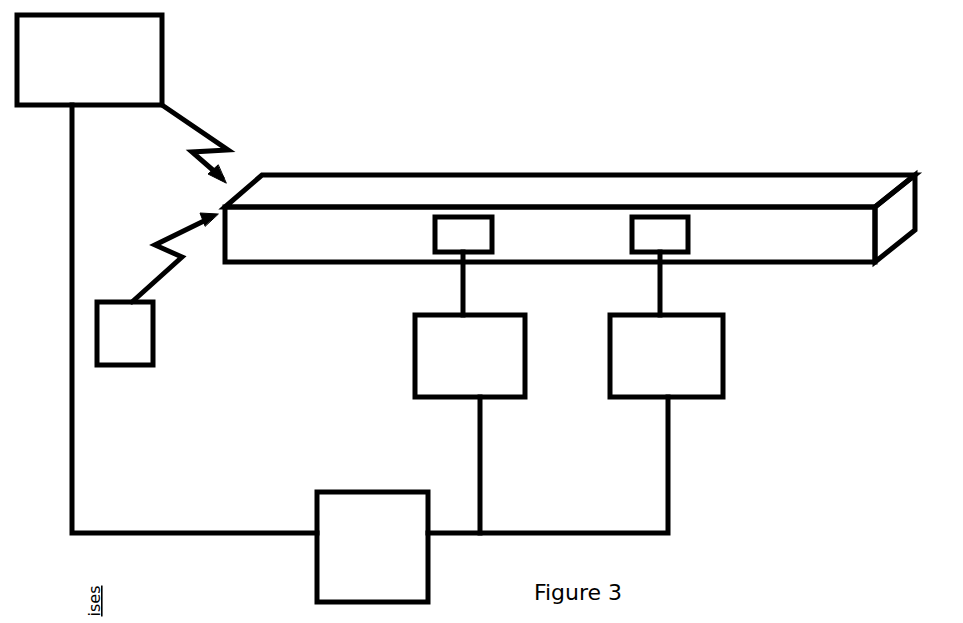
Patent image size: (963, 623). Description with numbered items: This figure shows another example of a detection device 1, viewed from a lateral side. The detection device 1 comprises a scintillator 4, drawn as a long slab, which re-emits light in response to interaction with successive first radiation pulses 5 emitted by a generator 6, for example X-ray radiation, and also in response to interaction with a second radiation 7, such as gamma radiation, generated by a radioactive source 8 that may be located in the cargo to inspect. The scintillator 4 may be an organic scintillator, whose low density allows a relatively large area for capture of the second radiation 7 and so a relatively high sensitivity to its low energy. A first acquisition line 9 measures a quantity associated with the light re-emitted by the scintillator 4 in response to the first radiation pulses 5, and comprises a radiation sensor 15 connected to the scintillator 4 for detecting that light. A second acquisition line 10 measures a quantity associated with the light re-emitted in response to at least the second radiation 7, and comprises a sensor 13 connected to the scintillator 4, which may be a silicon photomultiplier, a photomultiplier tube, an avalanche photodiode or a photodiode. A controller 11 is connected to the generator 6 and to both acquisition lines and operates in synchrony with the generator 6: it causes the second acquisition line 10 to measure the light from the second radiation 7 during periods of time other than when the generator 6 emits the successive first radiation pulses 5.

The detection device 1 is at (211, 426).
The scintillator 4 is at (570, 218).
The first radiation pulses 5 is at (203, 126).
The generator 6 is at (89, 60).
The second radiation 7 is at (167, 238).
The radioactive source 8 is at (125, 333).
The first acquisition line 9 is at (393, 398).
The second acquisition line 10 is at (748, 399).
The controller 11 is at (372, 547).
The sensor 13 is at (668, 228).
The radiation sensor 15 is at (455, 228).